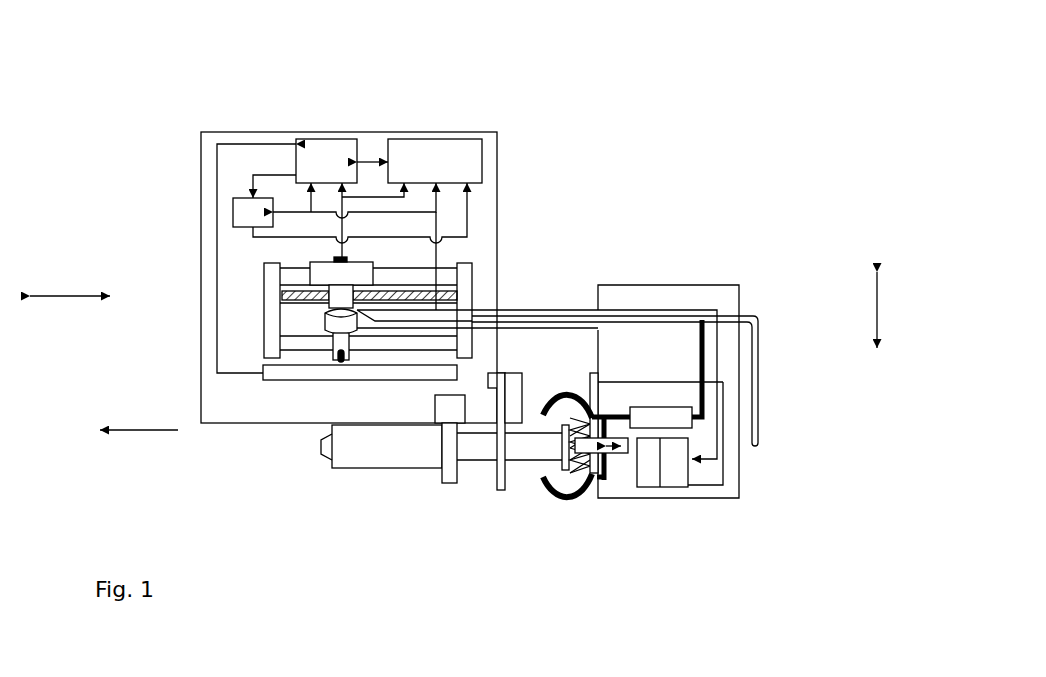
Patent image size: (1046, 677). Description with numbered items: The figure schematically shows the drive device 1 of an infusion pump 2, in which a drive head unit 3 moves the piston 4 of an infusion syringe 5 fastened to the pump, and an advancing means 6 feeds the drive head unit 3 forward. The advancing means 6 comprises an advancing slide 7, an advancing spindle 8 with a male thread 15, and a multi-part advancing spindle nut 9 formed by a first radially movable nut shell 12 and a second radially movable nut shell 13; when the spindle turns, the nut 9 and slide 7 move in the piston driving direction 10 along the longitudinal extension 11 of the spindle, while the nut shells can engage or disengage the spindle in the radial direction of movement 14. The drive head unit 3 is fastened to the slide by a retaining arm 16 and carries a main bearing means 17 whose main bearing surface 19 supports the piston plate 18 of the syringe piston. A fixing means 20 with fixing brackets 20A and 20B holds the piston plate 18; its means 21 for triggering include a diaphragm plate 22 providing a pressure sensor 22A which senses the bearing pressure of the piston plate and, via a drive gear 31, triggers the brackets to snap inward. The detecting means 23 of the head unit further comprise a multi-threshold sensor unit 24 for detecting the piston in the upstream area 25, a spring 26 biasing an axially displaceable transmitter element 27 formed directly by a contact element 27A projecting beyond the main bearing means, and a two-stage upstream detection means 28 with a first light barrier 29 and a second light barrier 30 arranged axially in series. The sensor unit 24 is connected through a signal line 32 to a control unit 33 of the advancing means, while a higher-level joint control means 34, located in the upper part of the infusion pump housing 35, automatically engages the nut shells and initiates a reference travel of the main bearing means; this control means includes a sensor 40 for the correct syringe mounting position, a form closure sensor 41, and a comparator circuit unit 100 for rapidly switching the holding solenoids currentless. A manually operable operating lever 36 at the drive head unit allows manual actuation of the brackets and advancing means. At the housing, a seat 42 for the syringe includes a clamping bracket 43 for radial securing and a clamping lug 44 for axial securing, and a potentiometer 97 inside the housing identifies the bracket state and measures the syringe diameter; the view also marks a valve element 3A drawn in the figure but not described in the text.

The drive device 1 is at (670, 267).
The infusion pump 2 is at (585, 138).
The drive head unit 3 is at (740, 295).
The valve housing 3A is at (728, 282).
The piston 4 is at (514, 449).
The infusion syringe 5 is at (366, 455).
The advancing means 6 is at (500, 263).
The advancing slide 7 is at (310, 266).
The advancing spindle 8 is at (280, 290).
The multi-part advancing spindle nut 9 is at (313, 306).
The piston driving direction 10 is at (130, 430).
The longitudinal extension 11 is at (70, 319).
The first radially movable nut shell 12 is at (343, 287).
The second radially movable nut shell 13 is at (327, 298).
The radial direction of movement 14 is at (877, 305).
The male thread 15 is at (415, 290).
The retaining arm 16 is at (567, 308).
The main bearing means 17 is at (600, 383).
The piston plate 18 is at (556, 500).
The main bearing surface 19 is at (595, 372).
The fixing means 20 is at (565, 510).
The fixing bracket 20A is at (552, 392).
The fixing bracket 20B is at (545, 495).
The means for triggering the fixing means 21 is at (602, 502).
The diaphragm plate 22 is at (595, 500).
The pressure sensor 22A is at (612, 383).
The detecting means 23 is at (667, 512).
The multi-threshold sensor unit 24 is at (698, 459).
The upstream area 25 is at (546, 492).
The spring 26 is at (582, 498).
The transmitter element 27 is at (625, 458).
The contact element 27A is at (608, 480).
The two-stage upstream detection means 28 is at (688, 477).
The first light barrier 29 is at (652, 480).
The second light barrier 30 is at (675, 480).
The drive gear 31 is at (690, 427).
The signal line 32 is at (717, 350).
The control unit 33 is at (336, 350).
The joint control means 34 is at (178, 158).
The infusion pump housing 35 is at (237, 130).
The operating lever 36 is at (758, 437).
The sensor 40 is at (273, 372).
The form closure sensor 41 is at (361, 283).
The seat 42 is at (415, 545).
The clamping bracket 43 is at (449, 478).
The clamping lug 44 is at (512, 380).
The potentiometer 97 is at (438, 407).
The comparator circuit unit 100 is at (233, 213).